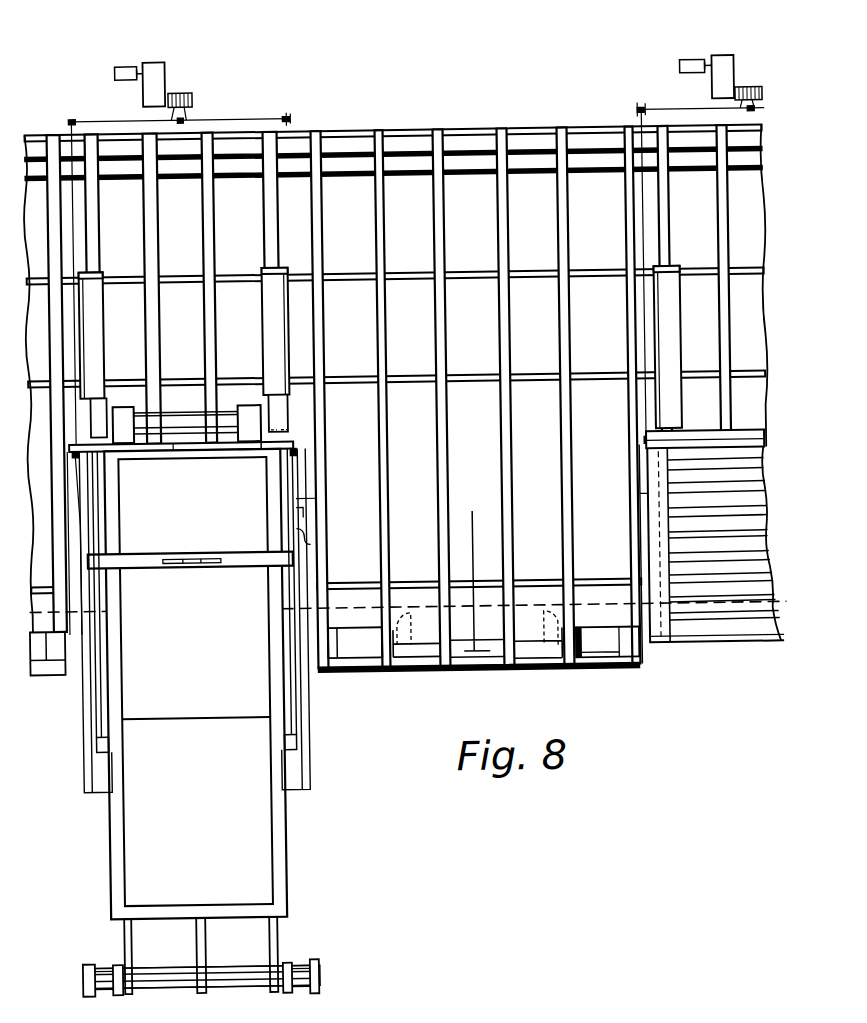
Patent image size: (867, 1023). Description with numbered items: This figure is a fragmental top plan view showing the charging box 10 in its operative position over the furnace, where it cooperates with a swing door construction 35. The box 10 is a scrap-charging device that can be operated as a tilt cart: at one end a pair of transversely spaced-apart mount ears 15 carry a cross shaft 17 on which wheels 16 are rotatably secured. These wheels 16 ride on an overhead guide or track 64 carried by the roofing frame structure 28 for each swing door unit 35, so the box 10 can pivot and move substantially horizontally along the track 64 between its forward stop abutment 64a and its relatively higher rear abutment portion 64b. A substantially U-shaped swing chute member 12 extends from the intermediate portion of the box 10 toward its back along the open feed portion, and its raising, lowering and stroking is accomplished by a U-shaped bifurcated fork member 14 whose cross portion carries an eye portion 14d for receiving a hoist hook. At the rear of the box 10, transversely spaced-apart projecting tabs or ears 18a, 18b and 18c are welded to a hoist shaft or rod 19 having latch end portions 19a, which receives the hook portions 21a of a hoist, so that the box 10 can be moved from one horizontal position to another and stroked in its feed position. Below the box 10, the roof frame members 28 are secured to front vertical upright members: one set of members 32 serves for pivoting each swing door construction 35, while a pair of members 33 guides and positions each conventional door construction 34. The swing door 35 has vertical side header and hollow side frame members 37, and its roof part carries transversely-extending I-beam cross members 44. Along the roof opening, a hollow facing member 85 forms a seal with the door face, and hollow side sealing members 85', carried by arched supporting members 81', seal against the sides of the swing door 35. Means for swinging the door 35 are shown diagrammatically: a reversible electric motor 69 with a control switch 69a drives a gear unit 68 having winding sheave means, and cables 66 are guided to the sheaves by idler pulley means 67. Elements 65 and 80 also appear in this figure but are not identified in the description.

The charging box 10 is at (282, 840).
The swing chute member 12 is at (94, 713).
The fork member 14 is at (259, 564).
The eye portion 14d is at (215, 556).
The mount ears 15 is at (136, 430).
The wheels 16 is at (102, 404).
The cross shaft 17 is at (198, 408).
The tab or ear 18a is at (271, 938).
The tab or ear 18b is at (199, 937).
The tab or ear 18c is at (125, 936).
The hoist shaft or rod 19 is at (240, 986).
The latch end portions 19a is at (313, 976).
The hook portions 21a is at (120, 992).
The roof frame members 28 is at (443, 333).
The vertical upright frame members 32 is at (344, 659).
The upright members 33 is at (364, 662).
The conventional door construction 34 is at (492, 659).
The swing door construction 35 is at (742, 646).
The side frame members 37 is at (81, 770).
The cross members 44 is at (749, 514).
The overhead guide track 64 is at (105, 308).
The front stop abutment 64a is at (257, 450).
The rear abutment portion 64b is at (100, 270).
The connector 65 is at (311, 542).
The cables 66 is at (267, 119).
The idler pulley means 67 is at (300, 120).
The gear unit 68 is at (198, 98).
The electric motor 69 is at (171, 78).
The control switch 69a is at (121, 70).
The post 80 is at (545, 276).
The supporting members 81' is at (330, 520).
The hollow facing member 85 is at (417, 444).
The hollow sealing members 85' is at (471, 486).